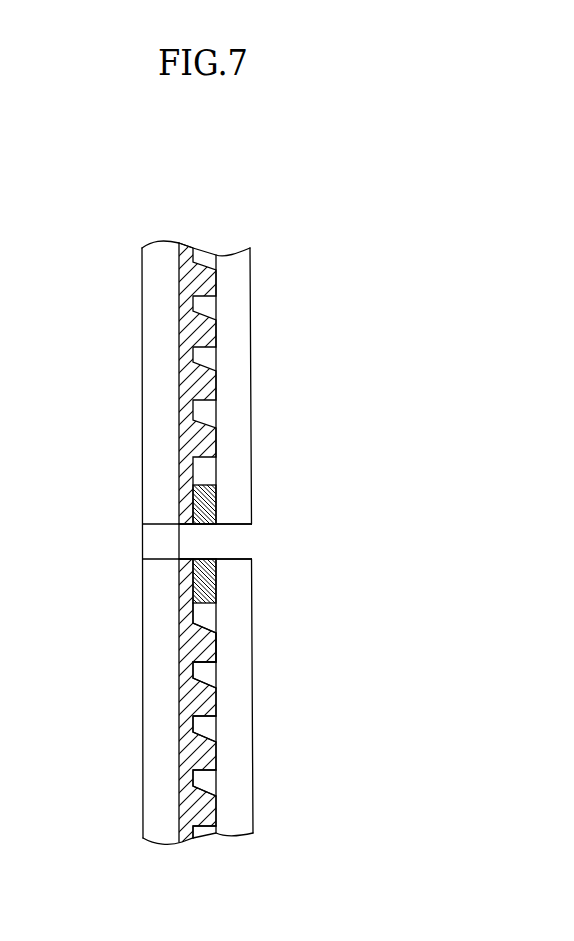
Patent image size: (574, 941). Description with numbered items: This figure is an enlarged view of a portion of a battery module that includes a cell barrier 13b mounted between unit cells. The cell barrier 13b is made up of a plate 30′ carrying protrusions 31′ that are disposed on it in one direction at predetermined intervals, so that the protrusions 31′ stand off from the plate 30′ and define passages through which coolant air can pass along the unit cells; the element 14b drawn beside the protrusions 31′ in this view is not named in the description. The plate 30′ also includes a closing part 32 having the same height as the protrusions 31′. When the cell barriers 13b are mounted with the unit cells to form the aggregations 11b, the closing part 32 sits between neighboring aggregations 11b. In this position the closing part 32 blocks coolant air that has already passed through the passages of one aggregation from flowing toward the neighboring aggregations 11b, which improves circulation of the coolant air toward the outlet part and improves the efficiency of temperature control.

The plate 30′ is at (182, 418).
The protrusion 31′ is at (183, 708).
The cell barrier 13b is at (188, 645).
The connection portion 14b is at (205, 673).
The closing part 32 is at (203, 559).
The aggregation 11b is at (313, 541).